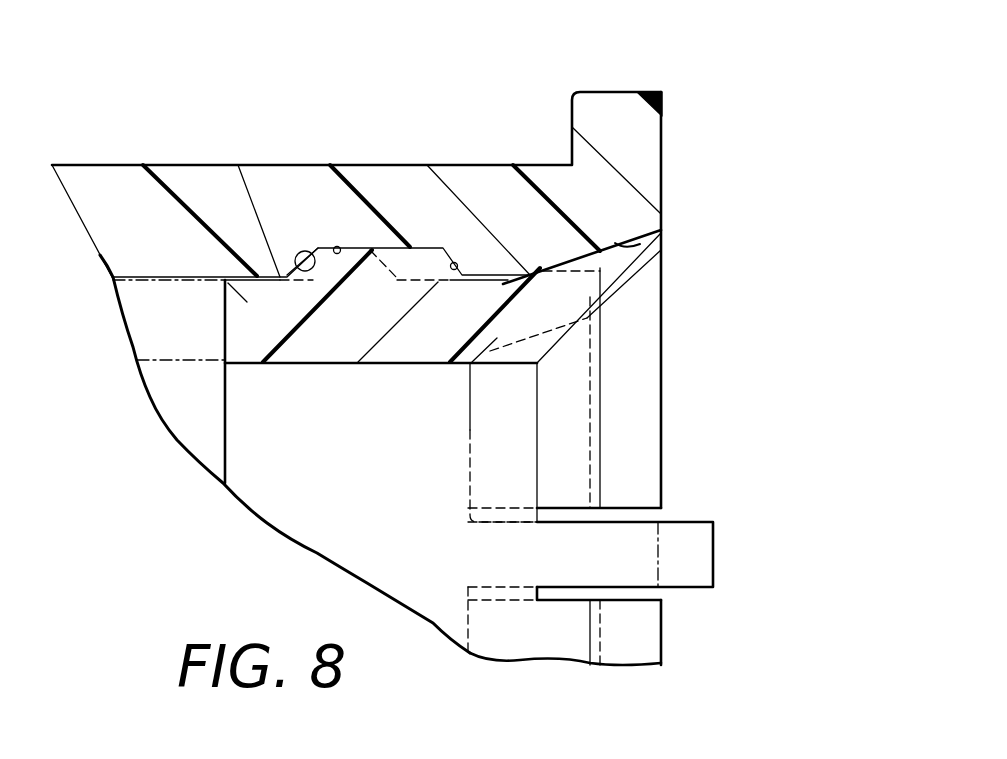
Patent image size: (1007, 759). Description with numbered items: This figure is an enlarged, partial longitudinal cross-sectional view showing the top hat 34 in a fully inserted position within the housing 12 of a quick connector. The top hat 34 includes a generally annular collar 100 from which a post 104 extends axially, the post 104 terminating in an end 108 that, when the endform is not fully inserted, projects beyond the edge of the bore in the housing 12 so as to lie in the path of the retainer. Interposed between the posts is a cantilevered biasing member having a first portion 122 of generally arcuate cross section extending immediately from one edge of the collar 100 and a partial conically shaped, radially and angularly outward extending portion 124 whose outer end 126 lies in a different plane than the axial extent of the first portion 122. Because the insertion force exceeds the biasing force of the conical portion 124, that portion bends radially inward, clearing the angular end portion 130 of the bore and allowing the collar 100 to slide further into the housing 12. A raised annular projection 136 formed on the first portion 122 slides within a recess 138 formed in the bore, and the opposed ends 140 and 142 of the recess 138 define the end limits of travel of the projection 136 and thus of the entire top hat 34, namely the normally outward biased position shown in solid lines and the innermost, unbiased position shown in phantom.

The housing 12 is at (100, 190).
The top hat 34 is at (262, 294).
The collar 100 is at (183, 423).
The post 104 is at (720, 526).
The end of post 108 is at (717, 553).
The first portion 122 is at (283, 290).
The conically shaped portion 124 is at (560, 263).
The outer end 126 is at (660, 258).
The angular end portion 130 is at (660, 233).
The raised annular projection 136 is at (395, 257).
The recess 138 is at (337, 247).
The end of recess 140 is at (453, 263).
The end of recess 142 is at (307, 247).